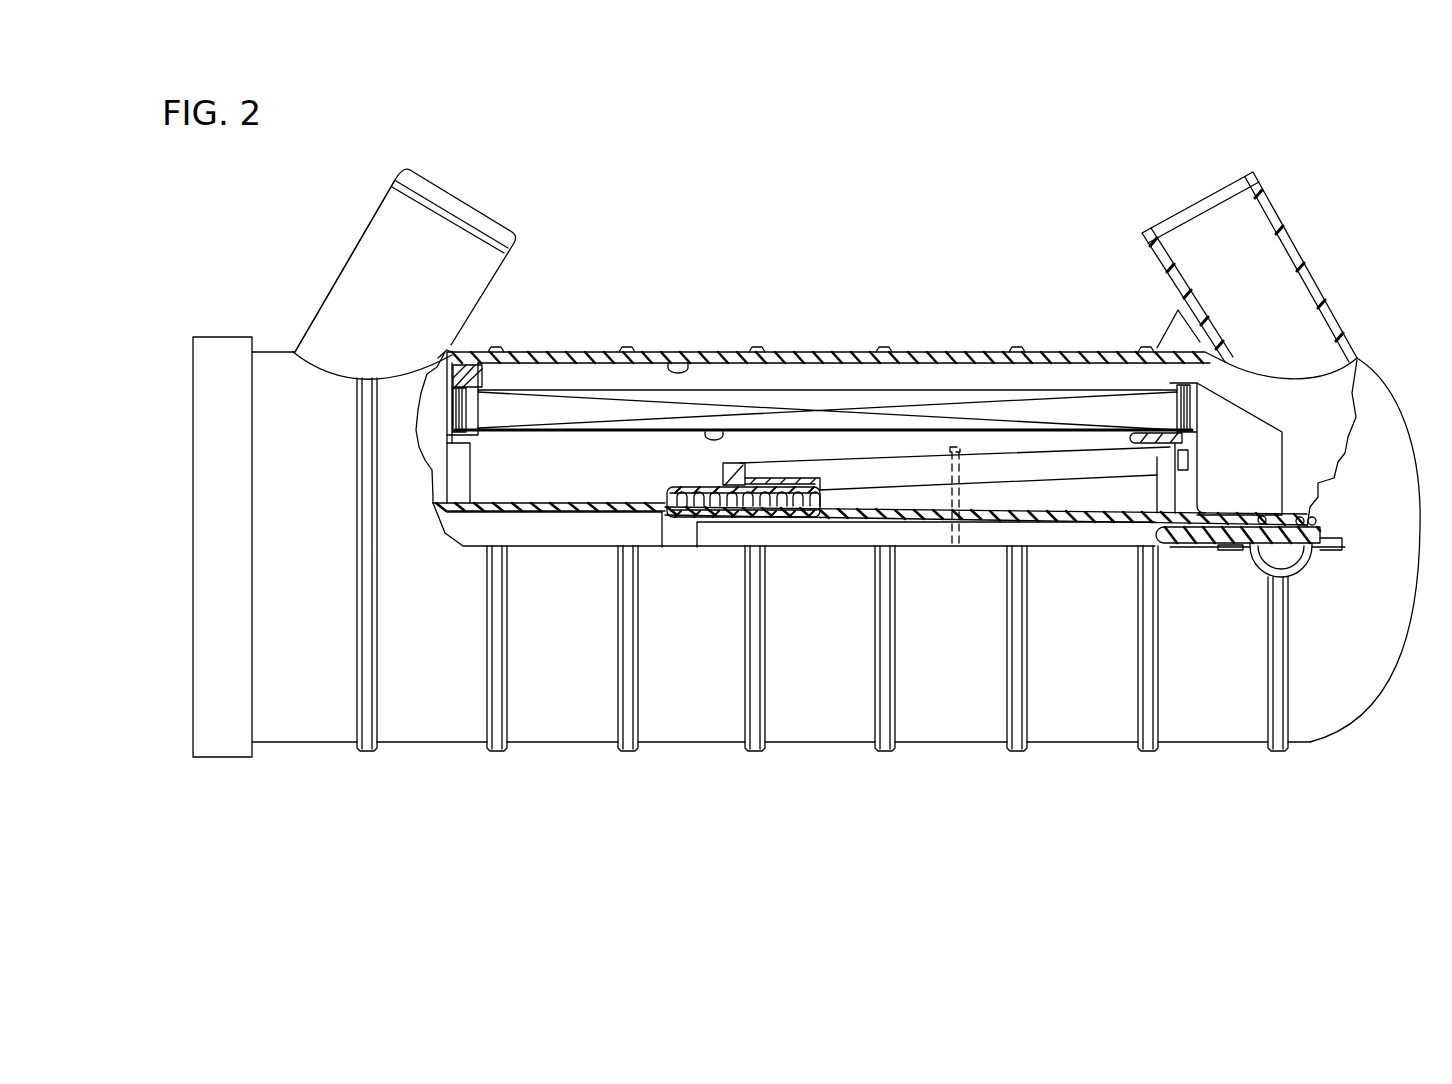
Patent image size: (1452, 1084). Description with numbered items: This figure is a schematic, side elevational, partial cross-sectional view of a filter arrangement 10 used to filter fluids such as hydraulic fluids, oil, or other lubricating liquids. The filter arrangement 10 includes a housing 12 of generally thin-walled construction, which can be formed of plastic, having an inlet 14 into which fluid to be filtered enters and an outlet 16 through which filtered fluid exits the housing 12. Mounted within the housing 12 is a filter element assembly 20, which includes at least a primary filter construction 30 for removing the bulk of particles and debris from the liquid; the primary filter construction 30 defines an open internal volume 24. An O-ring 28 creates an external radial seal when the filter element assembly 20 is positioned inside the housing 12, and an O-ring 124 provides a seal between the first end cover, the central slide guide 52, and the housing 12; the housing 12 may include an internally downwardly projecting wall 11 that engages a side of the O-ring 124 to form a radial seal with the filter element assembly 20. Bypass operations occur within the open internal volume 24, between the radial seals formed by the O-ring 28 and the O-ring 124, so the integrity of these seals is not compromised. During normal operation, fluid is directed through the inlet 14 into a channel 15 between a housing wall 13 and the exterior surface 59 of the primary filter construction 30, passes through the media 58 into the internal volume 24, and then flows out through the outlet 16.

The filter arrangement 10 is at (745, 212).
The internally downwardly projecting wall 11 is at (1208, 530).
The housing 12 is at (935, 745).
The housing wall 13 is at (581, 350).
The inlet 14 is at (1298, 243).
The channel 15 is at (690, 362).
The outlet 16 is at (493, 270).
The filter element assembly 20 is at (818, 378).
The open internal volume 24 is at (722, 432).
The O-ring 28 is at (462, 368).
The primary filter construction 30 is at (1033, 372).
The central slide guide 52 is at (1058, 512).
The media 58 is at (877, 395).
The exterior surface 59 is at (948, 388).
The O-ring 124 is at (1240, 515).